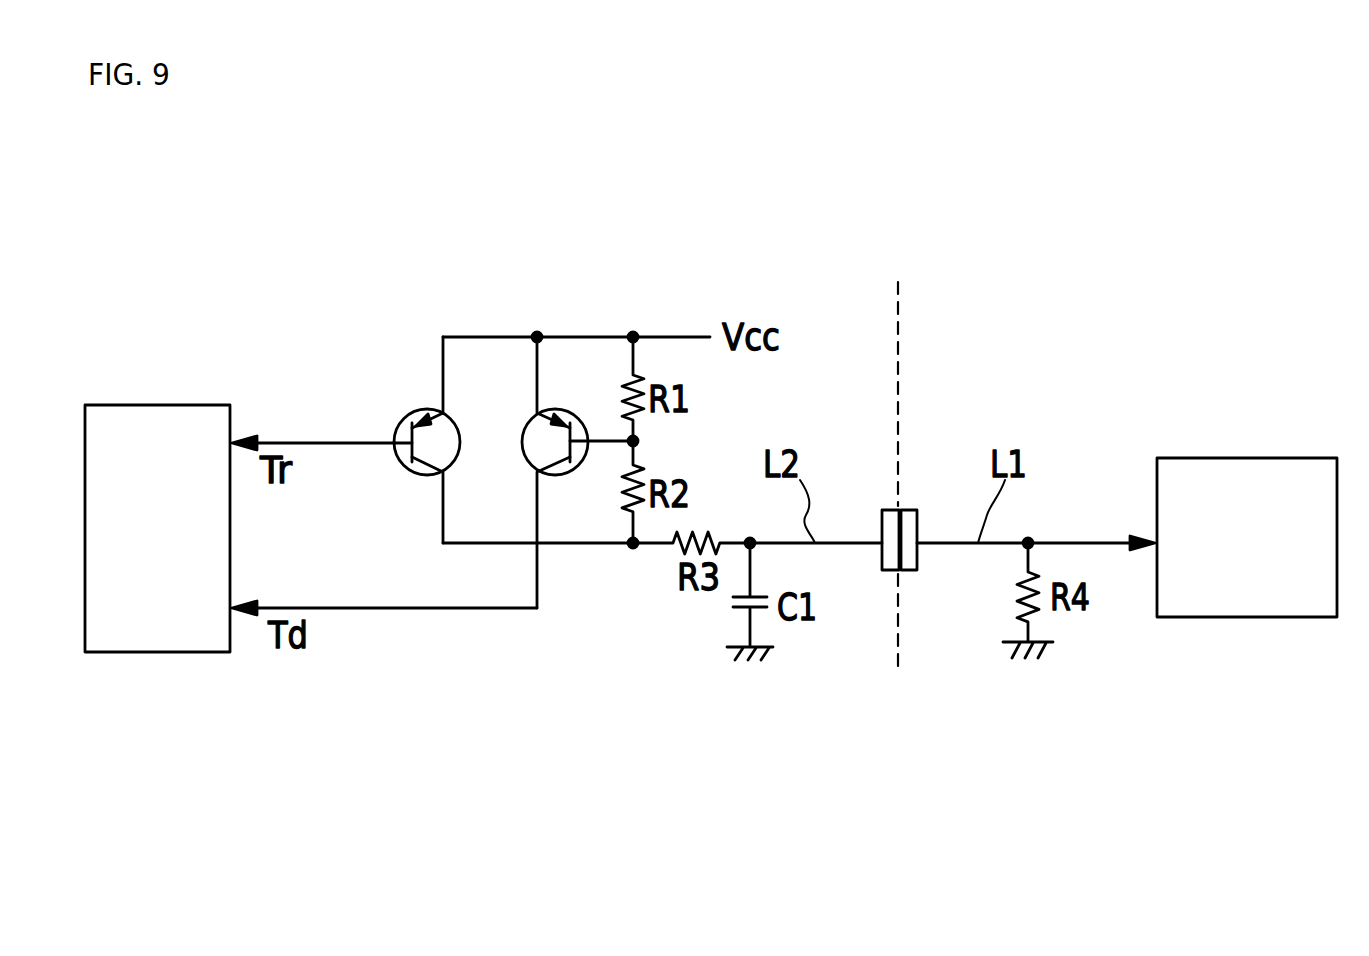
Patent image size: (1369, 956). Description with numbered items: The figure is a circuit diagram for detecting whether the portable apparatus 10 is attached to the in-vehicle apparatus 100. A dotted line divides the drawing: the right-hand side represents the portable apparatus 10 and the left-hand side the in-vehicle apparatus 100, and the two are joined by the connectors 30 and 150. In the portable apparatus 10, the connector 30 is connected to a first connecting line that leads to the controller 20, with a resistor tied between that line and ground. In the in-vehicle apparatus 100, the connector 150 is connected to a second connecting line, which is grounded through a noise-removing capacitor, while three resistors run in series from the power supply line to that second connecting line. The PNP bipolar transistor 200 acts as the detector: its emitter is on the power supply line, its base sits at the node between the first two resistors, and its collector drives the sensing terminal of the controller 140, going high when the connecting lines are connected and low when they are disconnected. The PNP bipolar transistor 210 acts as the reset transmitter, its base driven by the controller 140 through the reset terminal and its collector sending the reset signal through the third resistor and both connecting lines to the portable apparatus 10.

The controller 140 is at (175, 403).
The PNP bipolar transistor 210 is at (410, 420).
The PNP bipolar transistor 200 is at (563, 413).
The in-vehicle apparatus 100 is at (856, 378).
The portable apparatus 10 is at (933, 461).
The connector 150 is at (880, 510).
The connector 30 is at (915, 510).
The controller 20 is at (1228, 458).